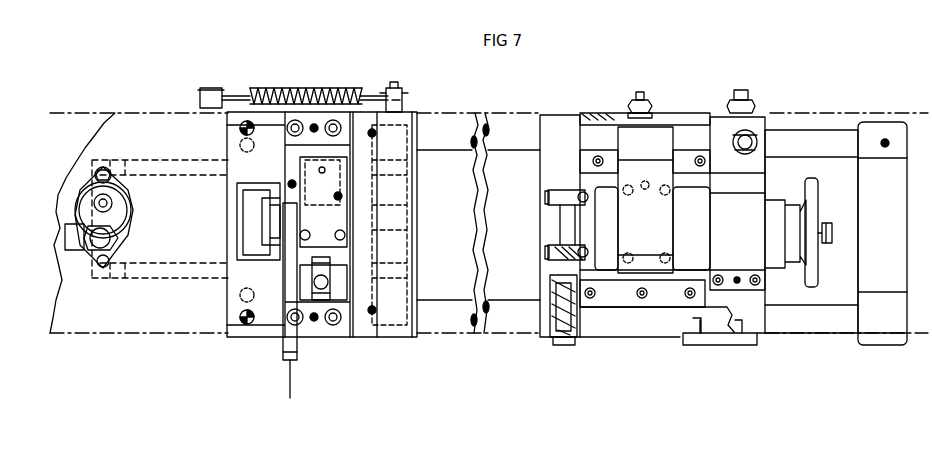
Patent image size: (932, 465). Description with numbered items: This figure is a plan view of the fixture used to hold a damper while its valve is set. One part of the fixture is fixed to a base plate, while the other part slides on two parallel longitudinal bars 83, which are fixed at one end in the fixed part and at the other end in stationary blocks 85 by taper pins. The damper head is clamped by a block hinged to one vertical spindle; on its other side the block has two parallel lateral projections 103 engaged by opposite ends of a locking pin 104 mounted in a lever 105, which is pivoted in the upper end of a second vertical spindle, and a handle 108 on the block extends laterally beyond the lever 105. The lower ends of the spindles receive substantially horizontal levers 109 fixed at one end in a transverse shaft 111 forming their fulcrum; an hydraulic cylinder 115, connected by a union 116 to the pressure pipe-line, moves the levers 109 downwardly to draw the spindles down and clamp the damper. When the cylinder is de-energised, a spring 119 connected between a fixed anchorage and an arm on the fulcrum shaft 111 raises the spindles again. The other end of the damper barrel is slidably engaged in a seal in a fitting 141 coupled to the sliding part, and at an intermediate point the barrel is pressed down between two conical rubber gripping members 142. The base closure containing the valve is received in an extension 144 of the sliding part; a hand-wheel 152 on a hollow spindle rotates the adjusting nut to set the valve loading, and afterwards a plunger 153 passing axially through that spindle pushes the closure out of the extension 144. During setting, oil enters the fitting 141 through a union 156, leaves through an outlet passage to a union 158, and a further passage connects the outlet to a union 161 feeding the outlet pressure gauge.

The longitudinal bars 83 is at (512, 140).
The stationary blocks 85 is at (886, 122).
The lateral projections 103 is at (338, 272).
The locking pin 104 is at (304, 268).
The lever 105 is at (322, 282).
The handle 108 is at (290, 391).
The horizontal levers 109 is at (155, 160).
The transverse shaft 111 is at (404, 88).
The hydraulic cylinder 115 is at (85, 208).
The union 116 is at (65, 238).
The spring 119 is at (298, 86).
The fitting 141 is at (607, 255).
The conical rubber gripping members 142 is at (545, 197).
The extension 144 is at (695, 231).
The hand-wheel 152 is at (810, 193).
The plunger 153 is at (832, 237).
The union 156 is at (638, 92).
The union 158 is at (750, 135).
The union 161 is at (741, 90).